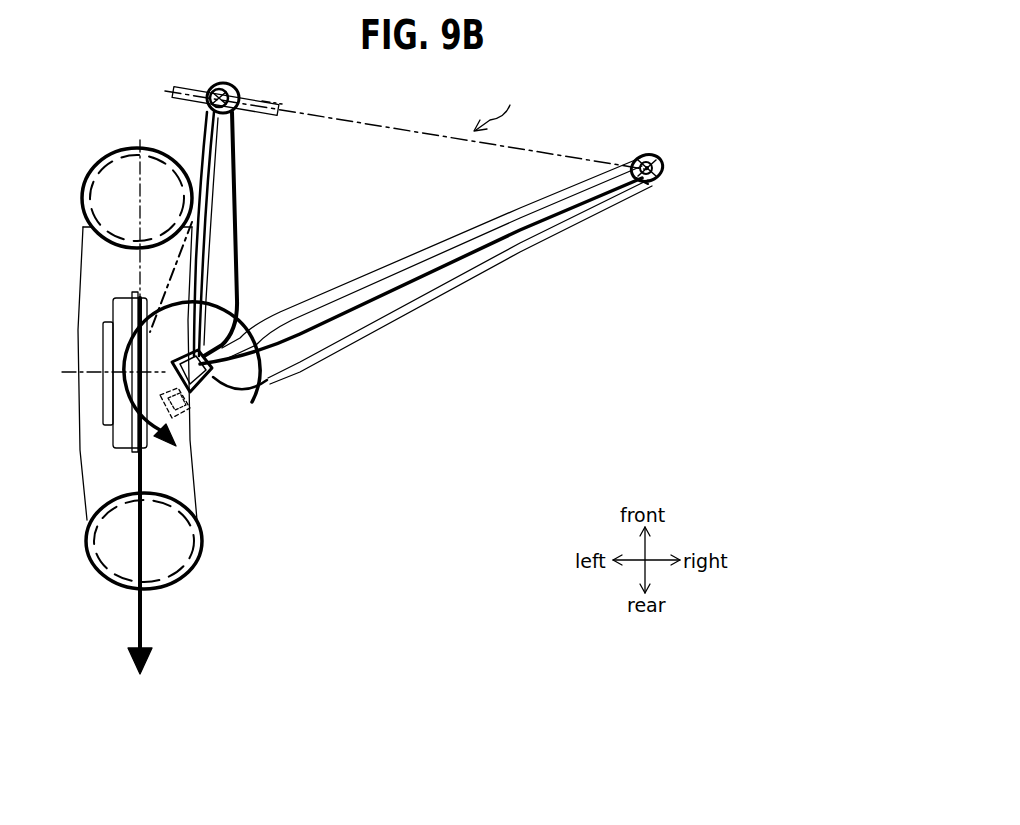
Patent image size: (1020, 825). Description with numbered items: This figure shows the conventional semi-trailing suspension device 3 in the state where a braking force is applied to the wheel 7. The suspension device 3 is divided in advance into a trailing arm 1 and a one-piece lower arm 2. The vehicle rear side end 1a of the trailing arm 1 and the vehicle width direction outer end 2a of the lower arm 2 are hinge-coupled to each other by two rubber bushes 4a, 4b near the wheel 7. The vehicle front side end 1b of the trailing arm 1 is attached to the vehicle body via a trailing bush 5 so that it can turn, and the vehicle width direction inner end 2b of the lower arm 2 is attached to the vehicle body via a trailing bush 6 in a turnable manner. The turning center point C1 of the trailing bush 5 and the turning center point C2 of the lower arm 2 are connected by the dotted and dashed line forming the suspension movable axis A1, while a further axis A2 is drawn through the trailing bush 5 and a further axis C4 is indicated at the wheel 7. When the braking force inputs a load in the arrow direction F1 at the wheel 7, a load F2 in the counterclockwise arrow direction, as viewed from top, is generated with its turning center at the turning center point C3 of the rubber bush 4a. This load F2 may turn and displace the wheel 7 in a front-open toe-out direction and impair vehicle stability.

The trailing arm 1 is at (238, 222).
The vehicle rear side end of the trailing arm 1a is at (170, 356).
The vehicle front side end of the trailing arm 1b is at (204, 122).
The lower arm 2 is at (440, 296).
The vehicle width direction outer end of the lower arm 2a is at (210, 395).
The vehicle width direction inner end of the lower arm 2b is at (643, 183).
The semi-trailing suspension device 3 is at (497, 106).
The rubber bush 4a is at (200, 397).
The rubber bush 4b is at (185, 422).
The trailing bush 5 is at (236, 92).
The trailing bush 6 is at (664, 165).
The wheel 7 is at (118, 152).
The turning center point of the trailing arm C1 is at (222, 86).
The turning center point of the lower arm C2 is at (650, 156).
The turning center point of the rubber bush C3 is at (160, 300).
The wheel axle axis C4 is at (135, 372).
The suspension movable axis A1 is at (404, 133).
The axis line A2 is at (283, 101).
The load in arrow direction F1 is at (135, 620).
The load in arrow direction F2 is at (240, 302).